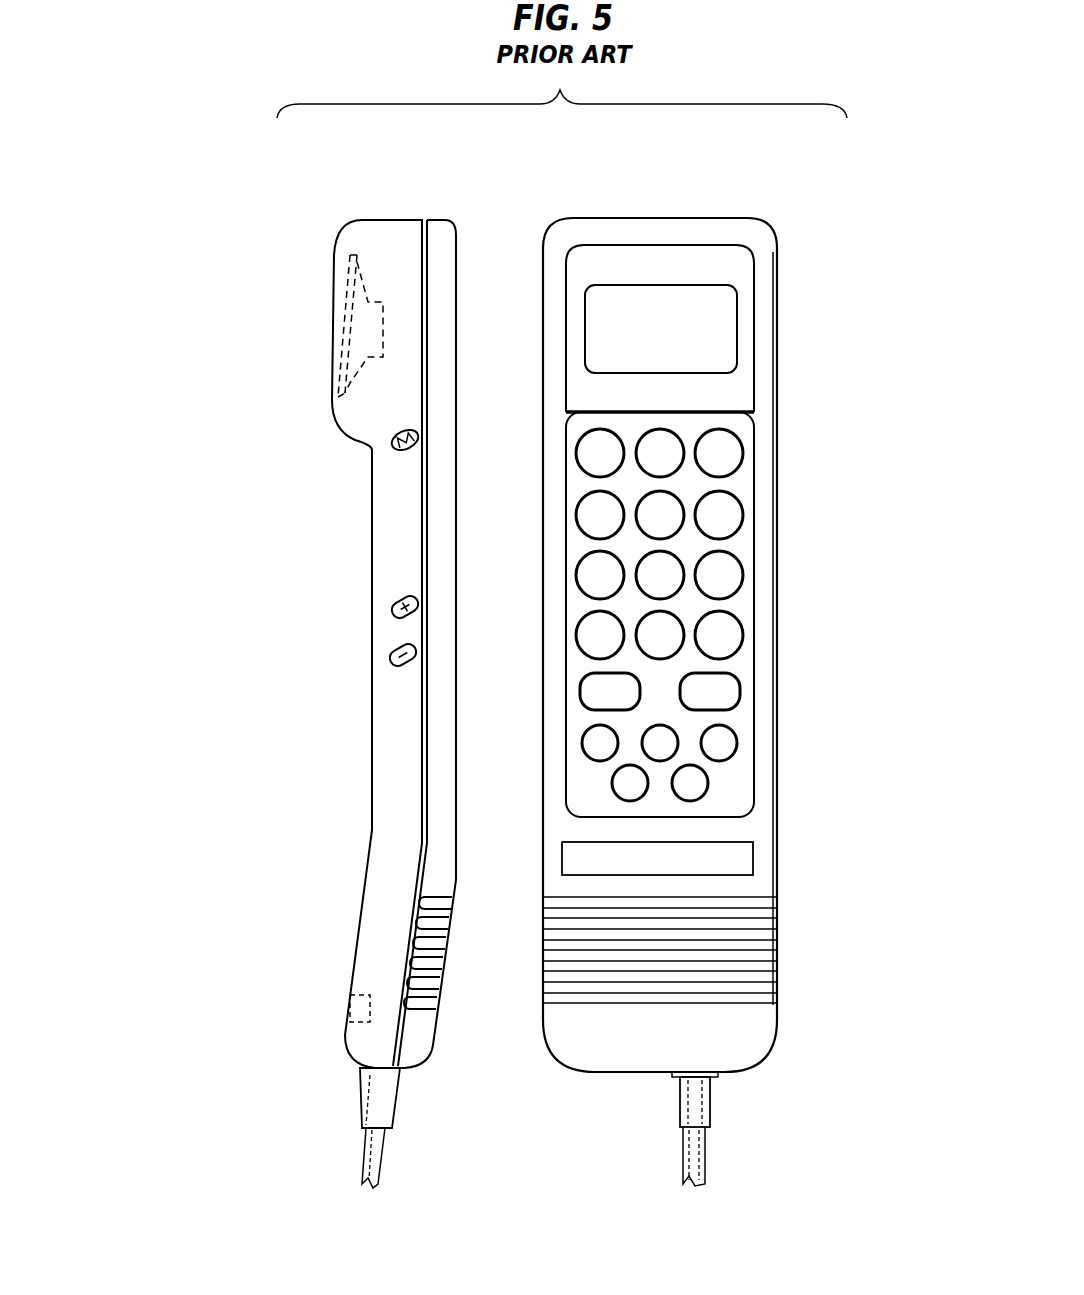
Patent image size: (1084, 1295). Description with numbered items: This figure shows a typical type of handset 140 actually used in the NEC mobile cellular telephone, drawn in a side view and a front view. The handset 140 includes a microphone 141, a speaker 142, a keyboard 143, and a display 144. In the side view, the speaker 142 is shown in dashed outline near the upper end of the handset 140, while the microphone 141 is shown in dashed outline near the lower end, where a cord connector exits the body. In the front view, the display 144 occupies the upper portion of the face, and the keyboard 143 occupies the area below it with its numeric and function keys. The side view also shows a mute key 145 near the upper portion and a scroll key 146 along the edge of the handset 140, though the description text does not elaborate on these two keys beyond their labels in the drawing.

The handset 140 is at (421, 204).
The microphone 141 is at (343, 1015).
The speaker 142 is at (334, 328).
The keyboard 143 is at (840, 740).
The display 144 is at (741, 329).
The mute key 145 is at (389, 441).
The scroll key 146 is at (386, 608).